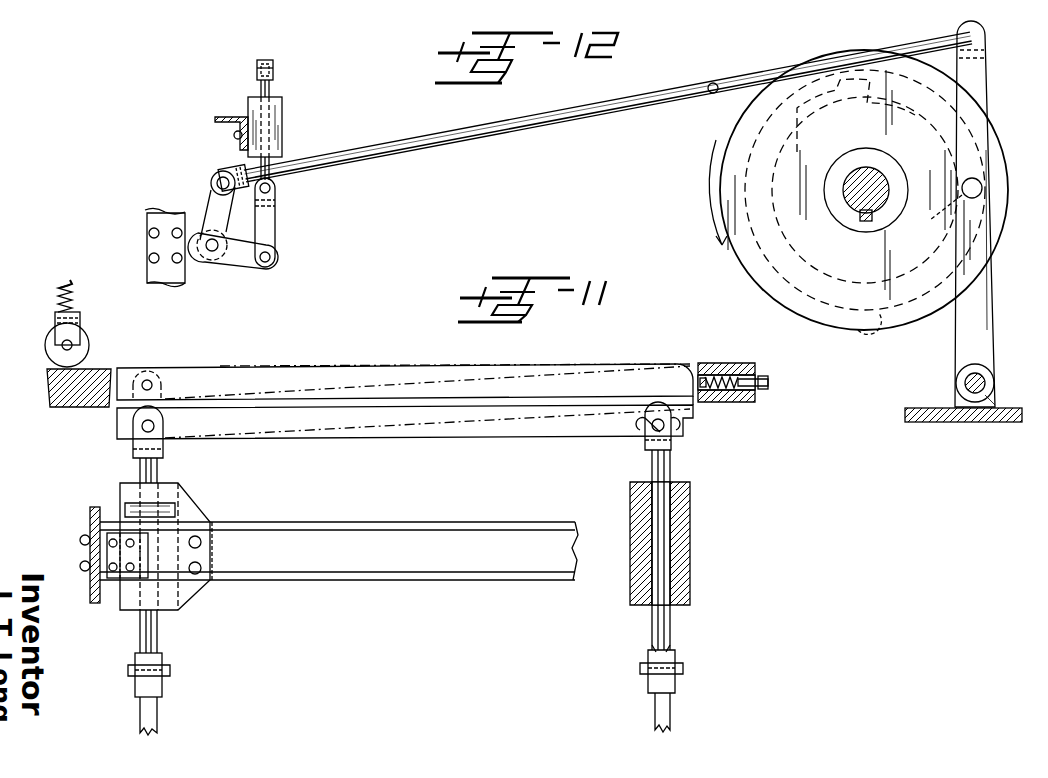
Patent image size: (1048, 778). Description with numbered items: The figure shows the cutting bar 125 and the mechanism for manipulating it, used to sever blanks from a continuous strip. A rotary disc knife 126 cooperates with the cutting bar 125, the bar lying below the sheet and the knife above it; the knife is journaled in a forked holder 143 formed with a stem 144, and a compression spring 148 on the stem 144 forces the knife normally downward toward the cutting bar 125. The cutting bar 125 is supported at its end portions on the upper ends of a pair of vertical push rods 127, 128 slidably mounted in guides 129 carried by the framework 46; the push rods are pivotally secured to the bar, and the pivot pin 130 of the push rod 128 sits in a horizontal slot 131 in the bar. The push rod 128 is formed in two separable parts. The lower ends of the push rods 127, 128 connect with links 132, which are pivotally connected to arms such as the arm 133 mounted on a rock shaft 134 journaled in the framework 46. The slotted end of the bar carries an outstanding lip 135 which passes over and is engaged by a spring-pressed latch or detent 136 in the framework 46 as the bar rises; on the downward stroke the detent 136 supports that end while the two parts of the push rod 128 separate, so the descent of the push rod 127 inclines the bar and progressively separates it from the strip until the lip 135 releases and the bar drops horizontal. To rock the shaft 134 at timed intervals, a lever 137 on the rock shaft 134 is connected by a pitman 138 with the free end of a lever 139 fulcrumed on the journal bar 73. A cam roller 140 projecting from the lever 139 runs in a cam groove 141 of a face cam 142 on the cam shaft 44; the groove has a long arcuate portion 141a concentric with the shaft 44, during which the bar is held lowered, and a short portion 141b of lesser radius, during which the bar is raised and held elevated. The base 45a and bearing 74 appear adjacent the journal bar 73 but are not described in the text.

In FIG. 12, the cam shaft 44 is at (872, 188).
In FIG. 12, the base 45a is at (962, 422).
In FIG. 12, the framework 46 is at (235, 128).
In FIG. 11, the framework 46 is at (45, 383).
In FIG. 12, the journal bar 73 is at (960, 385).
In FIG. 12, the pivot bearing 74 is at (998, 406).
In FIG. 12, the cutting bar 125 is at (265, 60).
In FIG. 11, the cutting bar 125 is at (468, 440).
In FIG. 11, the rotary disc knife 126 is at (88, 350).
In FIG. 11, the push rod 127 is at (160, 475).
In FIG. 12, the push rod 128 is at (278, 92).
In FIG. 11, the push rod 128 is at (650, 470).
In FIG. 12, the guide 129 is at (283, 120).
In FIG. 11, the guide 129 is at (632, 568).
In FIG. 11, the pivot pin 130 is at (672, 432).
In FIG. 11, the horizontal slot 131 is at (645, 428).
In FIG. 12, the link 132 is at (272, 228).
In FIG. 11, the link 132 is at (158, 725).
In FIG. 12, the arm 133 is at (248, 265).
In FIG. 12, the rock shaft 134 is at (209, 250).
In FIG. 12, the lip 135 is at (257, 72).
In FIG. 11, the lip 135 is at (694, 416).
In FIG. 11, the spring-pressed latch or detent 136 is at (708, 363).
In FIG. 12, the lever 137 is at (208, 200).
In FIG. 12, the pitman 138 is at (458, 146).
In FIG. 12, the lever 139 is at (960, 320).
In FIG. 12, the cam roller 140 is at (942, 208).
In FIG. 12, the cam groove 141 is at (870, 332).
In FIG. 12, the arcuate portion 141a is at (857, 199).
In FIG. 12, the short portion 141b is at (797, 152).
In FIG. 12, the face cam 142 is at (755, 258).
In FIG. 11, the forked holder 143 is at (55, 338).
In FIG. 11, the stem 144 is at (75, 290).
In FIG. 11, the compression spring 148 is at (75, 305).